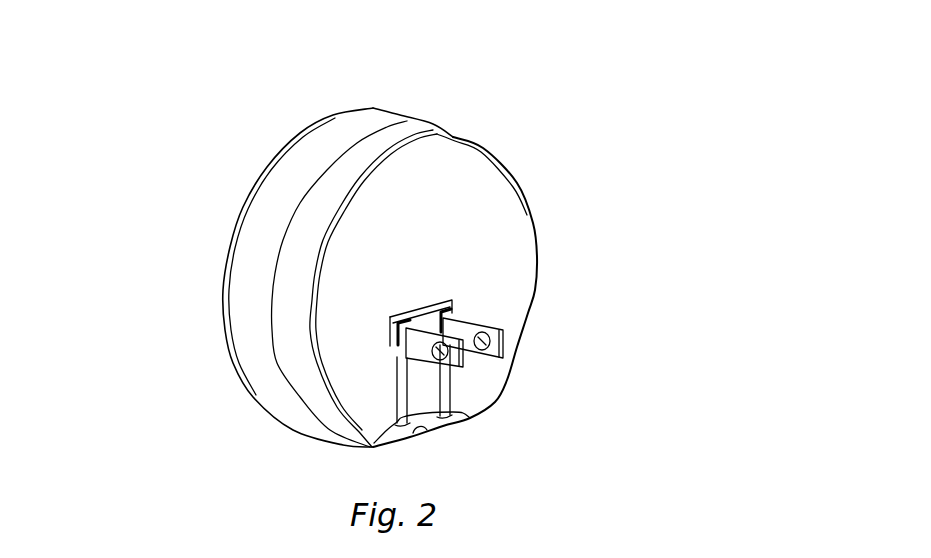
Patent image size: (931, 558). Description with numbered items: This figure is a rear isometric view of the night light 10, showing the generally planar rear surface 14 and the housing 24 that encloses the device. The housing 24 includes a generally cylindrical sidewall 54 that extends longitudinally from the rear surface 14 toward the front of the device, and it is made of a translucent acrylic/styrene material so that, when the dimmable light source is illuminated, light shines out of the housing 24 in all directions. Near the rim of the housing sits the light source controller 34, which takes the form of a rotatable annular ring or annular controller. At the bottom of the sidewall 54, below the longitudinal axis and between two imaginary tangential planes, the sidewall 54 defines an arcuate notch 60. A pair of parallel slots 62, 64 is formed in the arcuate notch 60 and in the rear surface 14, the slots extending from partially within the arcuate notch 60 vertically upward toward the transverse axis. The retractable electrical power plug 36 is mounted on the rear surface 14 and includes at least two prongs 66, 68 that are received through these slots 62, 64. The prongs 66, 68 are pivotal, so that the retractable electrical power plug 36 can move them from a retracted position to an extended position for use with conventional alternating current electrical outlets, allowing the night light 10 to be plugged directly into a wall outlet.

The night light 10 is at (590, 175).
The rear surface 14 is at (543, 238).
The housing 24 is at (438, 132).
The sidewall 54 is at (593, 38).
The light source controller 34 is at (215, 339).
The retractable electrical power plug 36 is at (369, 363).
The arcuate notch 60 is at (407, 431).
The slot 62 is at (397, 408).
The slot 64 is at (467, 417).
The prong 66 is at (417, 349).
The prong 68 is at (507, 343).